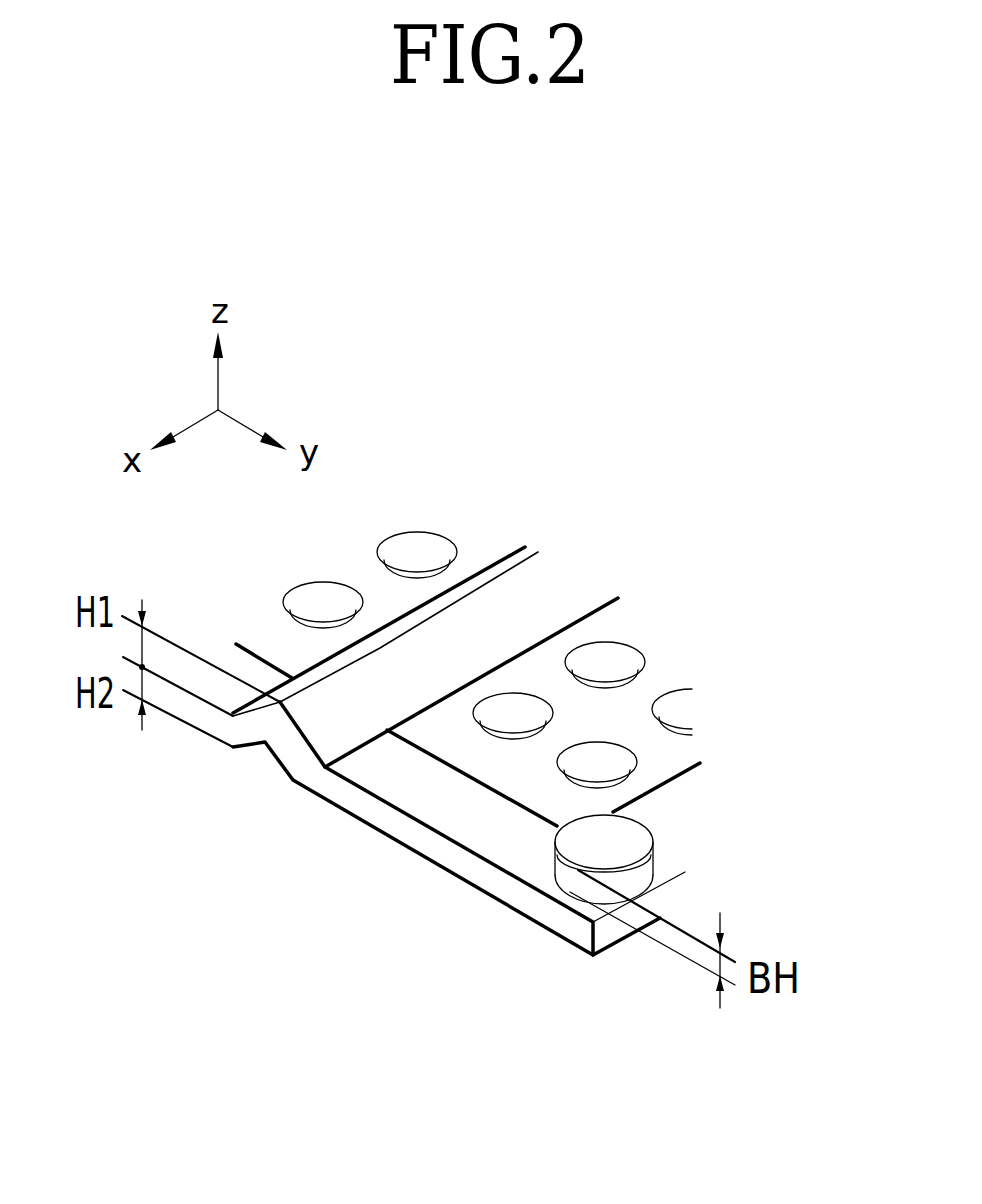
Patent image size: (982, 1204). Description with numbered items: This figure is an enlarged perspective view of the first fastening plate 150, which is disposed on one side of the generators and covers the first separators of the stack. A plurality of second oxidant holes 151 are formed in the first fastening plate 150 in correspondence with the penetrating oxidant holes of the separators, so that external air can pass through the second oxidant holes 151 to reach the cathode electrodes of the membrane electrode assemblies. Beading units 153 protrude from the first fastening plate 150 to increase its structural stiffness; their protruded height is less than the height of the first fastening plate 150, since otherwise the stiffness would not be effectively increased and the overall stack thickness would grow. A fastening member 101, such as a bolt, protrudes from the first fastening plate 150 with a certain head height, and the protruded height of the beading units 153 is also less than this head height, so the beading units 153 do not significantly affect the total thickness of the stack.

The first fastening plate 150 is at (254, 800).
The second oxidant holes 151 is at (620, 650).
The beading units 153 is at (507, 618).
The fastening member 101 is at (623, 843).